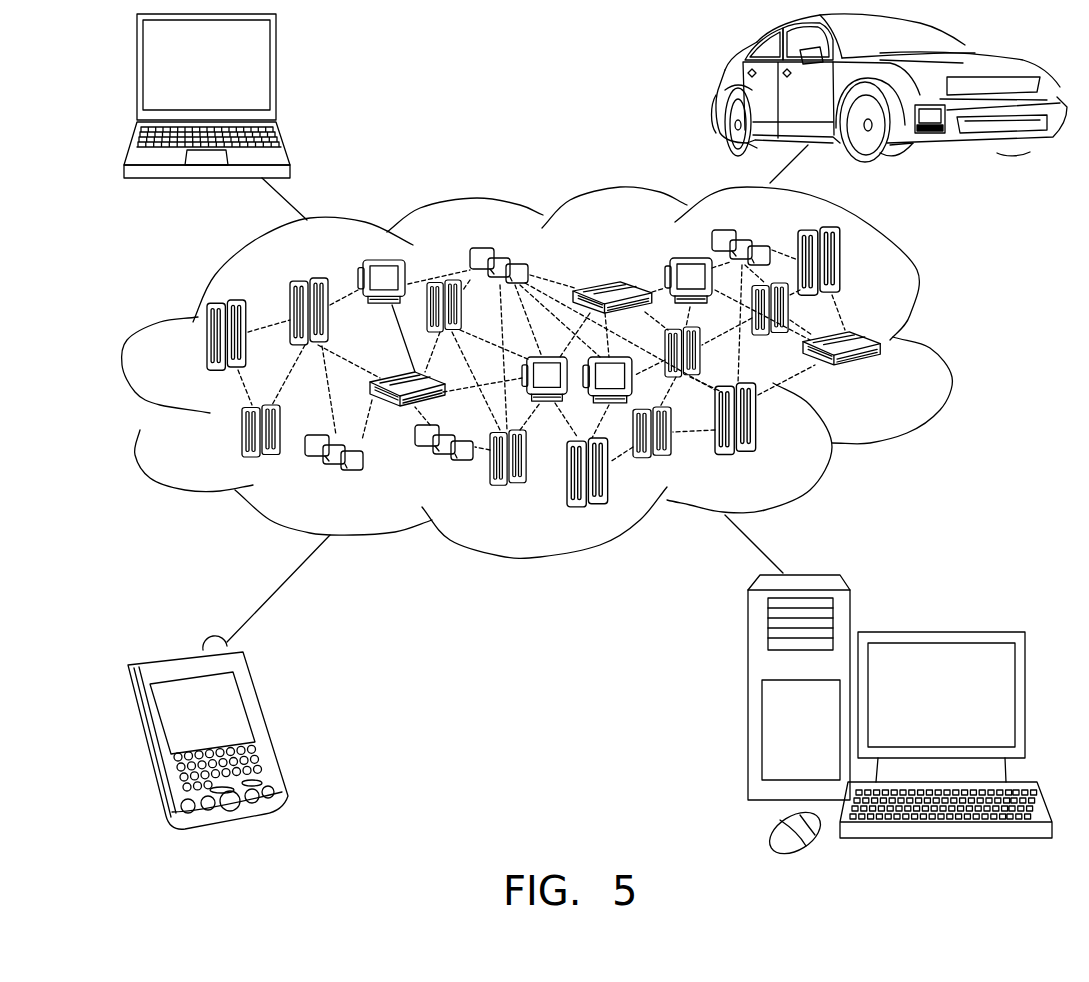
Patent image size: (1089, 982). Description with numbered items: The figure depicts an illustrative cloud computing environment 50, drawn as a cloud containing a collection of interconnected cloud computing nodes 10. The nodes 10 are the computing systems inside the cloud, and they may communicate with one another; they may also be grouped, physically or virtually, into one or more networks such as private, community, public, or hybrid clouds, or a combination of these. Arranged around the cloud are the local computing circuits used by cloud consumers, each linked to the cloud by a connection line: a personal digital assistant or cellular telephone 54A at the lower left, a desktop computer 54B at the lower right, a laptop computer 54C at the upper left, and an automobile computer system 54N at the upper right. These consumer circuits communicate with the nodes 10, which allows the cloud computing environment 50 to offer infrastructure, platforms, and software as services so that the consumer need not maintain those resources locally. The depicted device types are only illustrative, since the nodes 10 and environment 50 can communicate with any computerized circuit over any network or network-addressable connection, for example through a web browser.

The cloud computing node 10 is at (880, 374).
The cloud computing environment 50 is at (940, 346).
The personal digital assistant or cellular telephone 54A is at (268, 727).
The desktop computer 54B is at (940, 628).
The laptop computer 54C is at (278, 72).
The automobile computer system 54N is at (720, 94).